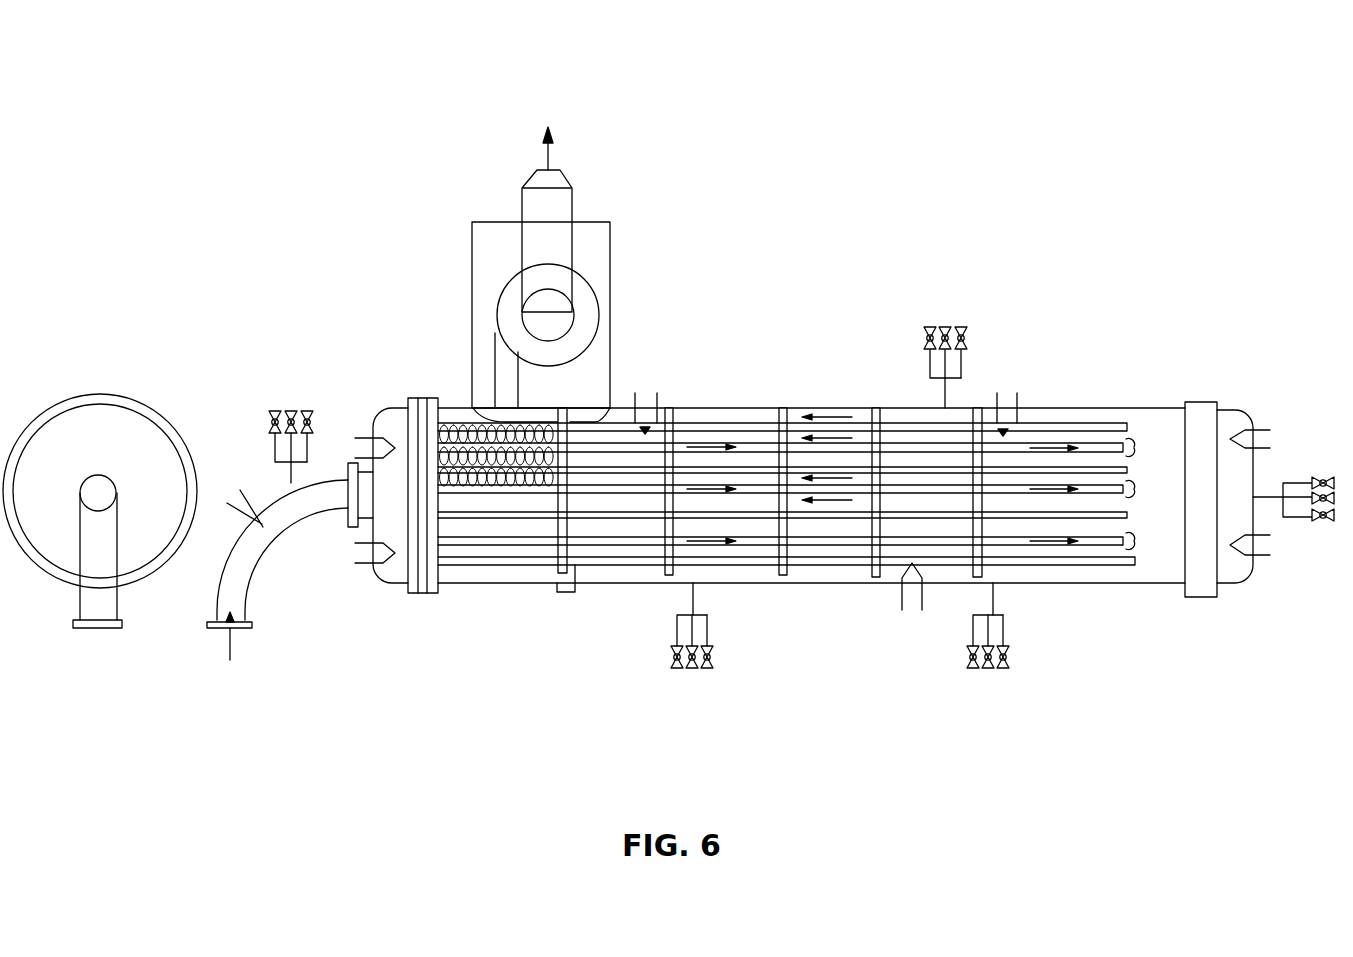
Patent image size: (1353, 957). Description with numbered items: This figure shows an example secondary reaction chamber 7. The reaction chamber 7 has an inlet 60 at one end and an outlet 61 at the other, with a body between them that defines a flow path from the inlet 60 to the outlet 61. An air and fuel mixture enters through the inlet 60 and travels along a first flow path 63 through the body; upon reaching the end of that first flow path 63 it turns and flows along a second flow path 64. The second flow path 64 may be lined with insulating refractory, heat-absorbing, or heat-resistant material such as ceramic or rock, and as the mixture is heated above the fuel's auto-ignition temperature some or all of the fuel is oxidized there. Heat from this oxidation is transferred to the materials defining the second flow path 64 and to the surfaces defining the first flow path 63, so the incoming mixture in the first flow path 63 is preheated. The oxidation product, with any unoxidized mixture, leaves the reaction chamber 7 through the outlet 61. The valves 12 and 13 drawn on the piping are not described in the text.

The reaction chamber 7 is at (206, 120).
The control valve 12 is at (275, 408).
The control valves 13 is at (291, 408).
The inlet 60 is at (232, 645).
The outlet 61 is at (548, 155).
The first flow path 63 is at (862, 425).
The second flow path 64 is at (685, 417).